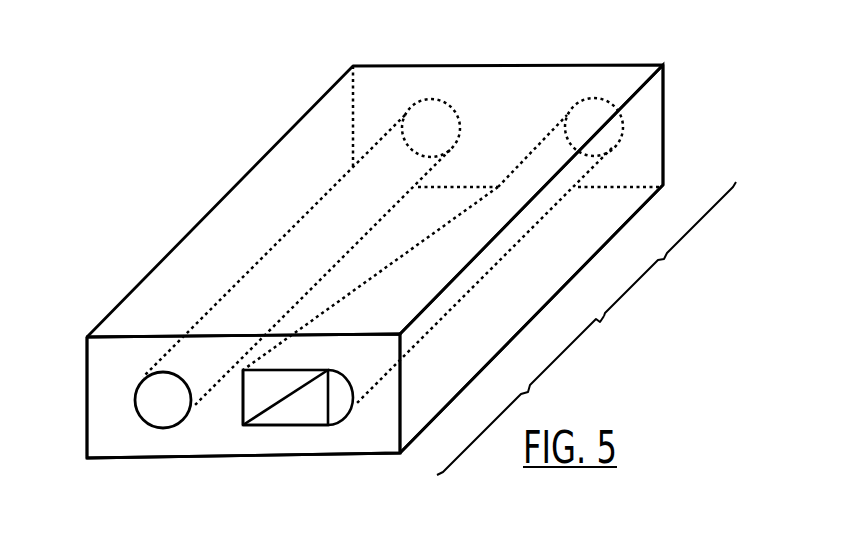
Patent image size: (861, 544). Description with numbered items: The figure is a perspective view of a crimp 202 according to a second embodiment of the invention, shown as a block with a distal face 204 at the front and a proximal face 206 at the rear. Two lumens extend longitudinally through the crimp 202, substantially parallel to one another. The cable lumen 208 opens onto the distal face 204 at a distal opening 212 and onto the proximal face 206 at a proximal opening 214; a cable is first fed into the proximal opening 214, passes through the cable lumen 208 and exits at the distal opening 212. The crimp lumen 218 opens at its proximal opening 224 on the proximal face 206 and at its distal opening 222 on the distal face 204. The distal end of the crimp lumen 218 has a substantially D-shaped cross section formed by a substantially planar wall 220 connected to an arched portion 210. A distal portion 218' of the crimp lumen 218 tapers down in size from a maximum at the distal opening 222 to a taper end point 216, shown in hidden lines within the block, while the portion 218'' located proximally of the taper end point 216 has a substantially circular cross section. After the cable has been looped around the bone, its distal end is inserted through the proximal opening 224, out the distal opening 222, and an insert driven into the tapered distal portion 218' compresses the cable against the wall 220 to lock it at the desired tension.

The crimp 202 is at (212, 193).
The distal face 204 is at (105, 373).
The proximal face 206 is at (653, 148).
The cable lumen 208 is at (163, 407).
The arched portion 210 is at (356, 398).
The distal opening 212 is at (153, 390).
The proximal opening 214 is at (431, 100).
The taper end point 216 is at (440, 243).
The crimp lumen 218 is at (283, 414).
The distal portion 218' is at (520, 395).
The distal portion 218'' is at (670, 249).
The substantially planar wall 220 is at (241, 407).
The distal opening 222 is at (316, 426).
The proximal opening 224 is at (594, 98).